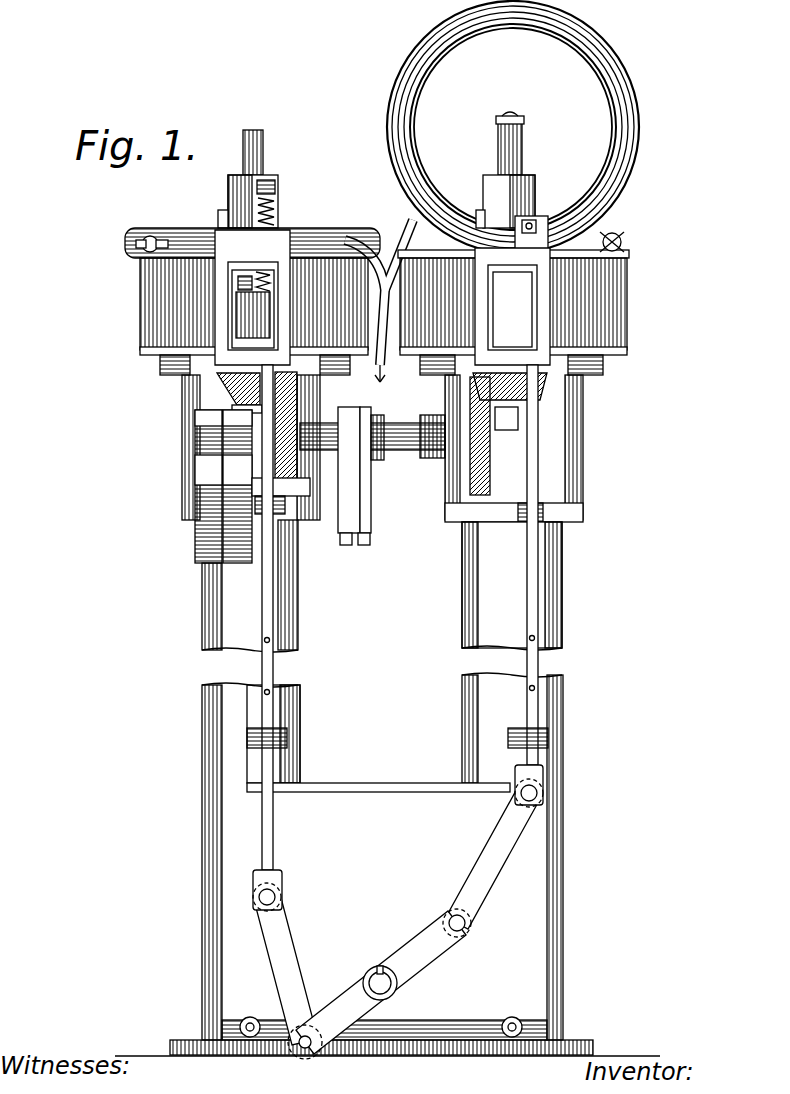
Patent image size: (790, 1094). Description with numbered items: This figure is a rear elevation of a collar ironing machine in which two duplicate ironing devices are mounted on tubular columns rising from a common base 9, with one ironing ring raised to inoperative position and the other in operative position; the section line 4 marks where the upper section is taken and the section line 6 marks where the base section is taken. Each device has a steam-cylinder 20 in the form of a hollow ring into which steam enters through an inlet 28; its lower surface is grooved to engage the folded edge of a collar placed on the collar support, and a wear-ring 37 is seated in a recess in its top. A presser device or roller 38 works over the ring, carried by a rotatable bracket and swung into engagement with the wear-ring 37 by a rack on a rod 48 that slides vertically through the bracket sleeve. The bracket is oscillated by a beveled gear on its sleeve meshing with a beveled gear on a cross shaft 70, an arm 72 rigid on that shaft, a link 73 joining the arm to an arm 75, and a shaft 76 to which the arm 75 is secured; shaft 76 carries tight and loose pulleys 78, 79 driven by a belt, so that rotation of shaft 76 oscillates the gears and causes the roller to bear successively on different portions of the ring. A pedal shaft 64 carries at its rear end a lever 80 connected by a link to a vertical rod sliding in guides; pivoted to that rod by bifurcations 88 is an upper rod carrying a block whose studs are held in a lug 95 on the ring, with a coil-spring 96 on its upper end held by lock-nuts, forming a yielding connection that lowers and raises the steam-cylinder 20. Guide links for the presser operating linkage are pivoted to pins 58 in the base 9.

The section line 4— 4 is at (252, 135).
The section line 6— 6 is at (163, 820).
The base 9 is at (205, 908).
The steam-cylinder 20 is at (400, 80).
The inlet 28 is at (350, 238).
The wear-ring 37 is at (433, 48).
The presser device or roller 38 is at (522, 142).
The rod 48 is at (263, 164).
The pins 58 is at (250, 1017).
The shaft 64 is at (367, 983).
The cross shaft 70 is at (393, 430).
The arm 72 is at (372, 500).
The link 73 is at (366, 482).
The arm 75 is at (345, 456).
The shaft 76 is at (281, 488).
The tight pulley 78 is at (208, 486).
The loose pulley 79 is at (237, 486).
The lever 80 is at (400, 948).
The bifurcations 88 is at (270, 303).
The lug 95 is at (546, 222).
The coil-spring 96 is at (277, 210).